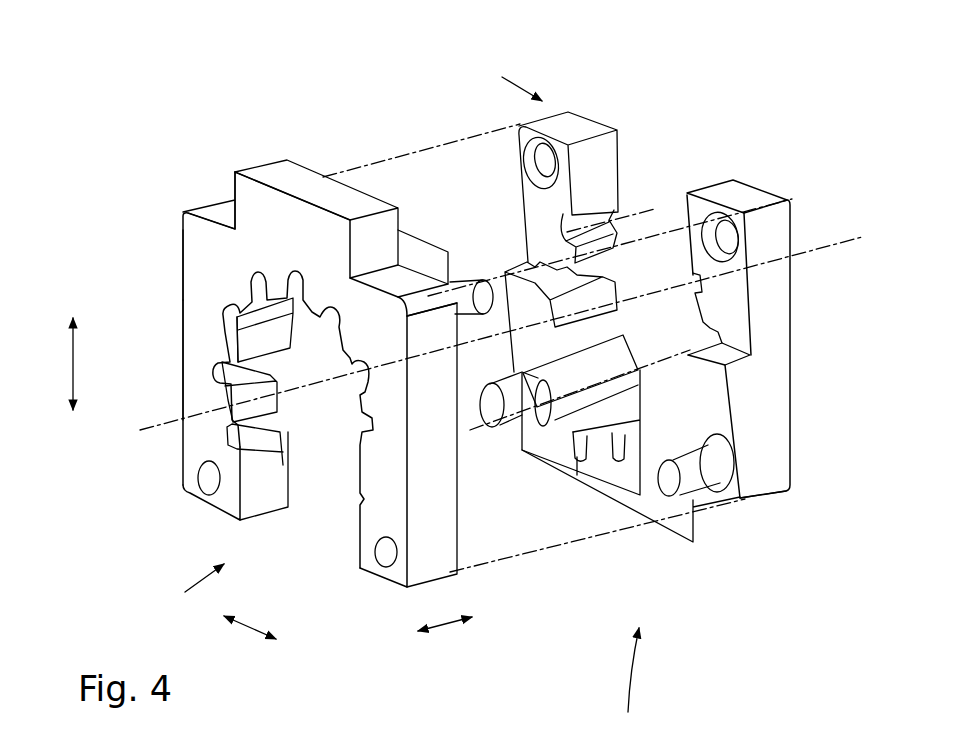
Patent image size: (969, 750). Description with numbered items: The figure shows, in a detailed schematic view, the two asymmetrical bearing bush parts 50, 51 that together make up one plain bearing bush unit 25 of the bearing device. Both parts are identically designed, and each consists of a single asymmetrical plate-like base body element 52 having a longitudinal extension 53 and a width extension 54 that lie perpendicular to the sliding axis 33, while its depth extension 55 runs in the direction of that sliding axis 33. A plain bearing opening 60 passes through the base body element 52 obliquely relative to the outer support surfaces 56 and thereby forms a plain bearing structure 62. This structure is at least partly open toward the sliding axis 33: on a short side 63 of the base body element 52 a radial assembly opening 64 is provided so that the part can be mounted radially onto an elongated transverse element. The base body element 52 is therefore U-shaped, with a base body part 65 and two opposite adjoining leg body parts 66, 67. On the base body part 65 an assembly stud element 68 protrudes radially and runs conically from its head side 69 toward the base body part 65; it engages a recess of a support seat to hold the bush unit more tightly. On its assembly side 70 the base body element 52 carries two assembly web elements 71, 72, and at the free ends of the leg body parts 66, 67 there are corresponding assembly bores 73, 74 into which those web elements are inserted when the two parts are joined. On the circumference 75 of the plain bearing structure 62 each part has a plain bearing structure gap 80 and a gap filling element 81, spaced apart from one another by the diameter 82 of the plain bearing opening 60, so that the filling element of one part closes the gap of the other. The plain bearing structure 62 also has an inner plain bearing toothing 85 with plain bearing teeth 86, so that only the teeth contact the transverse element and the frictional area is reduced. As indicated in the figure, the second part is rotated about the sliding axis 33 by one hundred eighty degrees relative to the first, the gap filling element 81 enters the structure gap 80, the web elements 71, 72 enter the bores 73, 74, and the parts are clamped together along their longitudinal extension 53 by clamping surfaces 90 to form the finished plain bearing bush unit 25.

The plain bearing bush unit 25 is at (637, 684).
The sliding axis 33 is at (867, 239).
The asymmetrical bearing bush part 50 is at (289, 136).
The asymmetrical bearing bush part 51 is at (638, 90).
The asymmetrical plate-like base body element 52 is at (200, 236).
The longitudinal extension 53 is at (73, 362).
The width extension 54 is at (251, 631).
The depth extension 55 is at (450, 627).
The outer support surface 56 is at (186, 283).
The plain bearing opening 60 is at (305, 402).
The plain bearing structure 62 is at (356, 408).
The short side 63 is at (348, 333).
The radial assembly opening 64 is at (320, 505).
The base body part 65 is at (233, 247).
The leg body part 66 is at (190, 386).
The leg body part 67 is at (445, 510).
The assembly stud element 68 is at (272, 198).
The head side 69 is at (305, 180).
The assembly side 70 is at (528, 203).
The assembly web element 71 is at (472, 285).
The assembly web element 72 is at (672, 492).
The assembly bore 73 is at (386, 560).
The assembly bore 74 is at (208, 485).
The circumference 75 is at (216, 348).
The plain bearing structure gap 80 is at (675, 175).
The gap filling element 81 is at (563, 438).
The diameter 82 is at (603, 251).
The inner plain bearing toothing 85 is at (600, 456).
The plain bearing tooth 86 is at (552, 432).
The clamping surface 90 is at (524, 277).